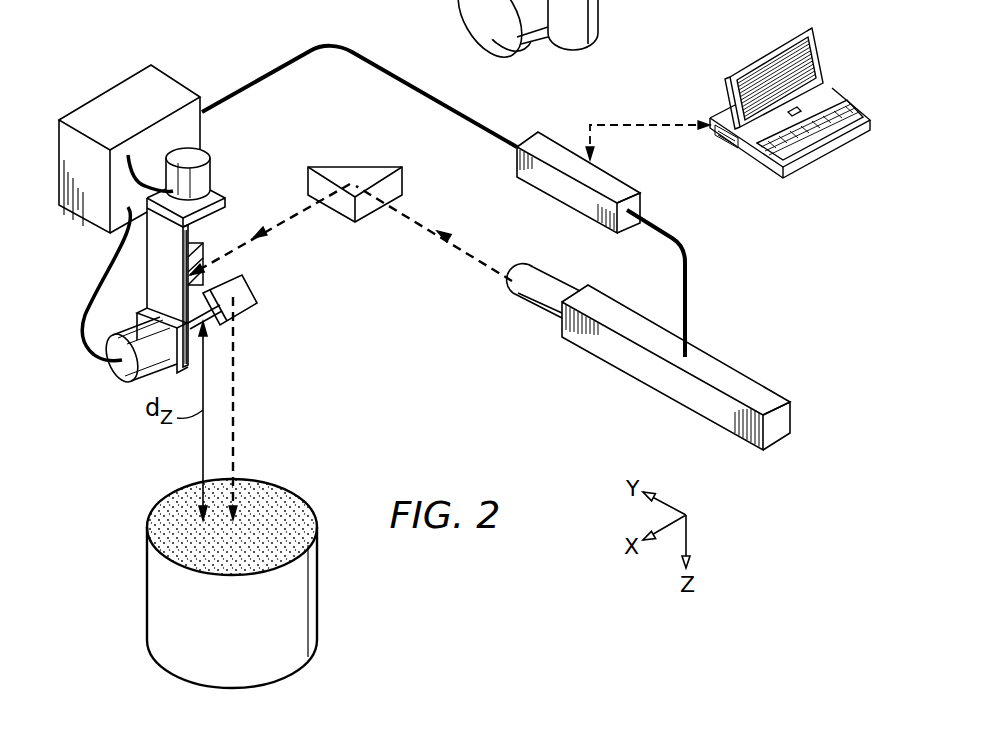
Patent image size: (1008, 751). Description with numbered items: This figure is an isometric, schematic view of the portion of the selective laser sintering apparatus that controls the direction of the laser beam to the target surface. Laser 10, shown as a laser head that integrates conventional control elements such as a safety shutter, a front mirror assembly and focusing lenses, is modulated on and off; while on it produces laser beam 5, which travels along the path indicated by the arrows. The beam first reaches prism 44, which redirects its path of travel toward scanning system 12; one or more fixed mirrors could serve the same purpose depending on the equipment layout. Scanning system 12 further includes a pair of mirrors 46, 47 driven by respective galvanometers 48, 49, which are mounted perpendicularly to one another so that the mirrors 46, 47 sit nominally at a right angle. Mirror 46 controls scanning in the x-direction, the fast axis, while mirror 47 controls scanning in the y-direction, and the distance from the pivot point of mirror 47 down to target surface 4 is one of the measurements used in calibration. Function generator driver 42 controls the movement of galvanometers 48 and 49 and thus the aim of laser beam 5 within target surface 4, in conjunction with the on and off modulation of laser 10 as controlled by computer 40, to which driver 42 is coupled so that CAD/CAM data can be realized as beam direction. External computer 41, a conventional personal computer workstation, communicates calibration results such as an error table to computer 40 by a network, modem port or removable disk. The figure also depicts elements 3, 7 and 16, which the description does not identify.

The stage housing 3 is at (90, 107).
The function generator driver 42 is at (167, 67).
The galvanometer 48 is at (203, 155).
The galvanometer 49 is at (123, 377).
The mirror 46 is at (203, 257).
The mirror 47 is at (250, 307).
The scanning system 12 is at (265, 275).
The laser beam 5 is at (233, 392).
The target surface 4 is at (167, 505).
The target cylinder 7 is at (317, 605).
The prism 44 is at (402, 178).
The computer 40 is at (613, 180).
The external computer 41 is at (767, 172).
The camera 16 is at (602, 16).
The laser 10 is at (637, 370).